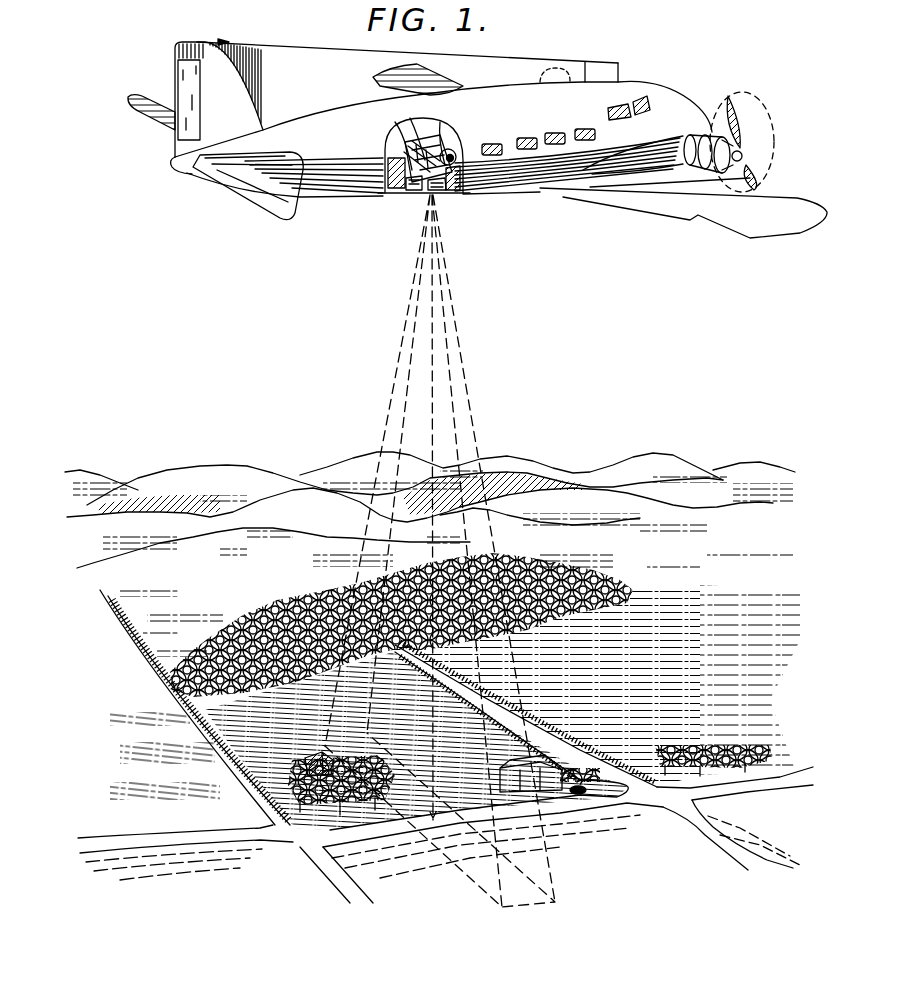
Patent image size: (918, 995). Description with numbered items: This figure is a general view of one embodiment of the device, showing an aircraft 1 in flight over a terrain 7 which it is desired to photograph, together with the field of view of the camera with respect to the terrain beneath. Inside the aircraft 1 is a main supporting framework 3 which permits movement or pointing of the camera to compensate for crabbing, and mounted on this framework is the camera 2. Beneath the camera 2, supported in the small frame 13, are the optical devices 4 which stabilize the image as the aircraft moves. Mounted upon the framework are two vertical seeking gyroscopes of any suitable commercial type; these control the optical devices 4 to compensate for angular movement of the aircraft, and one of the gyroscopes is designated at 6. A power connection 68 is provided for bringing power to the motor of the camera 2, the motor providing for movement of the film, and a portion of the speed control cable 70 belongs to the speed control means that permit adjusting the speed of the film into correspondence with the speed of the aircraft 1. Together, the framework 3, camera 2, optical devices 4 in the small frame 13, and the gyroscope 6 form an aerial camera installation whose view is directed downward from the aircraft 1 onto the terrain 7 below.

The aircraft 1 is at (477, 138).
The camera 2 is at (437, 140).
The main supporting framework 3 is at (395, 193).
The optical devices 4 is at (438, 192).
The gyroscope 6 is at (413, 192).
The terrain 7 is at (296, 880).
The small frame 13 is at (452, 192).
The power connection 68 is at (455, 153).
The speed control cable 70 is at (425, 158).